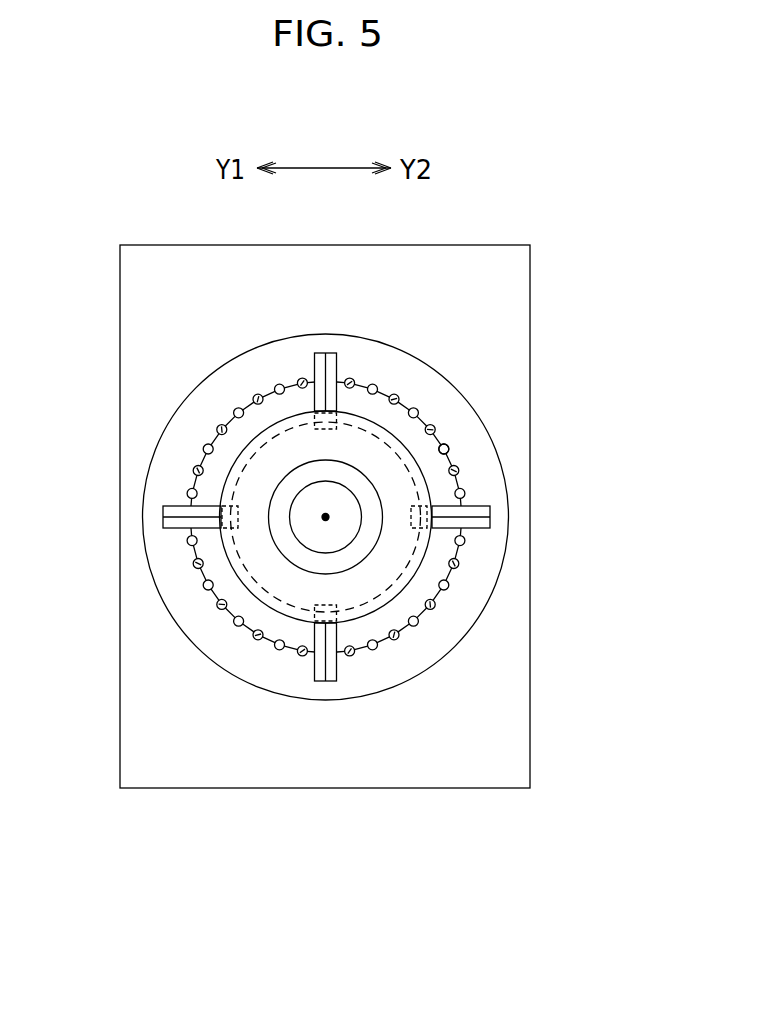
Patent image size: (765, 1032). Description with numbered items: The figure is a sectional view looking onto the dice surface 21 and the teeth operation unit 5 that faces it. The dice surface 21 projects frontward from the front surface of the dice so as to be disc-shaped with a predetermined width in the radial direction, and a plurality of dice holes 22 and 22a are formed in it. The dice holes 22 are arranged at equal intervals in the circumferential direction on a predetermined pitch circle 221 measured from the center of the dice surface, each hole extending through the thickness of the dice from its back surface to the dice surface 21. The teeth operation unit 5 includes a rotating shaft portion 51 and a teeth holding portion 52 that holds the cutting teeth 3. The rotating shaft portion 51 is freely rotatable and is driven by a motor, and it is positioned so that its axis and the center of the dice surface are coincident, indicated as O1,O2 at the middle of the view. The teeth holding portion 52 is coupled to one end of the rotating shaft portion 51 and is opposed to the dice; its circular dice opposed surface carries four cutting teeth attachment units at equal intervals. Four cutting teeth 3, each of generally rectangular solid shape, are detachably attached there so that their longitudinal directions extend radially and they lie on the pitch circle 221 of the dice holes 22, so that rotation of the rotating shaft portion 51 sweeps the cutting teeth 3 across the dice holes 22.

The cutting teeth 3 is at (328, 353).
The teeth operation unit 5 is at (428, 568).
The dice surface 21 is at (448, 417).
The dice holes 22 is at (412, 413).
The dice hole 22a is at (477, 503).
The pitch circle 221 is at (450, 455).
The rotating shaft portion 51 is at (358, 535).
The teeth holding portion 52 is at (398, 602).
The center of dice surface and axis of rotating shaft portion O1,O2 is at (329, 522).